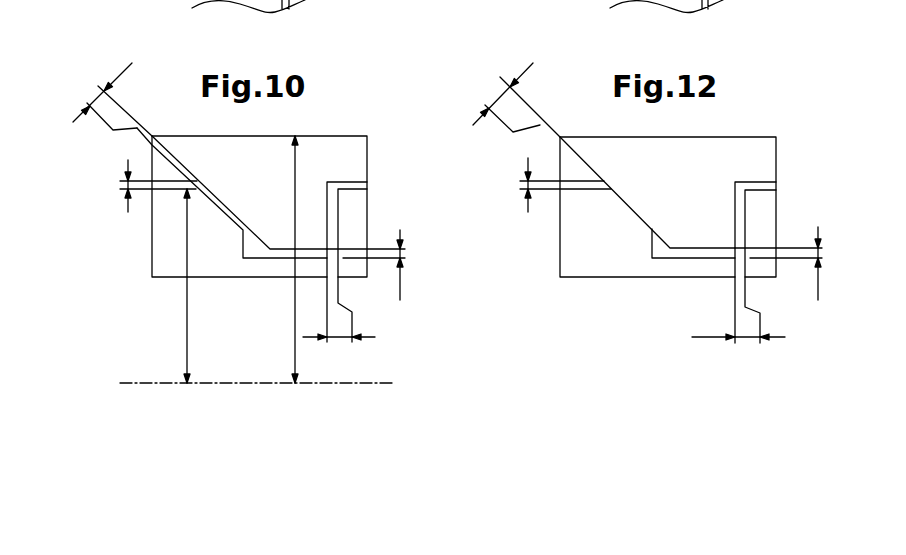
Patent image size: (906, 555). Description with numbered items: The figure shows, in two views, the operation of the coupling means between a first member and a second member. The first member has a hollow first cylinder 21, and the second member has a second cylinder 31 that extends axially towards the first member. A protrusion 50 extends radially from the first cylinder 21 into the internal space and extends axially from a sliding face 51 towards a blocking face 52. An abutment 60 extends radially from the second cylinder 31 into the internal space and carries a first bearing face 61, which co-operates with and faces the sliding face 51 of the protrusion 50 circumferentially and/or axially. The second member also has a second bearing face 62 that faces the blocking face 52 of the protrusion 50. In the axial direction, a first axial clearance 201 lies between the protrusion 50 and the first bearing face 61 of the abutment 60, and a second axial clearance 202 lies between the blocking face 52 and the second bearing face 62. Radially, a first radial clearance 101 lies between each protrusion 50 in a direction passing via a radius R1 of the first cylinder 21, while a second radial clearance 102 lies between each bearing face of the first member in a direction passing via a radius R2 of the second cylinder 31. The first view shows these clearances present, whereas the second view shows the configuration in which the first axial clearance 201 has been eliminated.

In FIG. 10, the first cylinder 21 is at (352, 152).
In FIG. 12, the first cylinder 21 is at (747, 148).
In FIG. 10, the second cylinder 31 is at (355, 268).
In FIG. 12, the second cylinder 31 is at (678, 268).
In FIG. 10, the protrusion 50 is at (307, 218).
In FIG. 12, the protrusion 50 is at (710, 230).
In FIG. 10, the sliding face 51 is at (205, 240).
In FIG. 12, the sliding face 51 is at (643, 222).
In FIG. 10, the blocking face 52 is at (367, 240).
In FIG. 12, the blocking face 52 is at (748, 242).
In FIG. 10, the abutment 60 is at (168, 228).
In FIG. 12, the abutment 60 is at (585, 240).
In FIG. 10, the first bearing face 61 is at (205, 240).
In FIG. 12, the first bearing face 61 is at (627, 207).
In FIG. 10, the second bearing face 62 is at (327, 232).
In FIG. 12, the second bearing face 62 is at (745, 230).
In FIG. 10, the first radial clearance 101 is at (400, 283).
In FIG. 12, the first radial clearance 101 is at (822, 283).
In FIG. 10, the second radial clearance 102 is at (128, 212).
In FIG. 12, the second radial clearance 102 is at (528, 212).
In FIG. 10, the first axial clearance 201 is at (132, 63).
In FIG. 12, the first axial clearance 201 is at (533, 63).
In FIG. 10, the second axial clearance 202 is at (335, 338).
In FIG. 12, the second axial clearance 202 is at (707, 337).
In FIG. 10, the radius of the first cylinder R1 is at (295, 328).
In FIG. 10, the radius of the second cylinder R2 is at (186, 307).